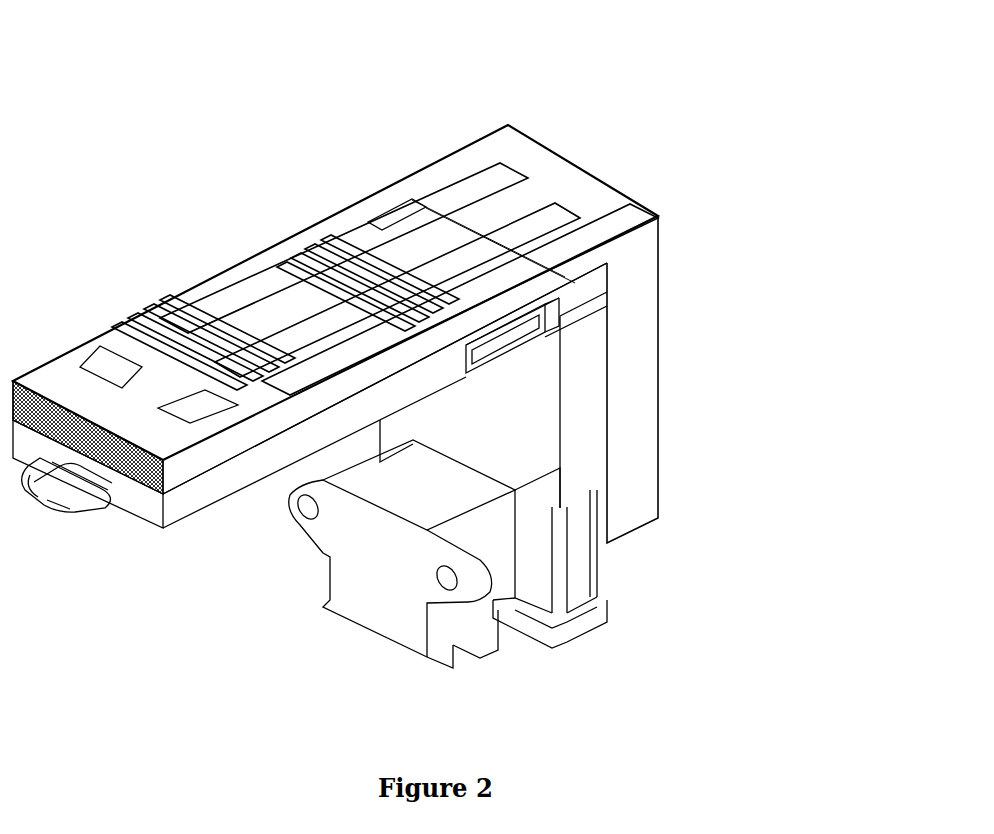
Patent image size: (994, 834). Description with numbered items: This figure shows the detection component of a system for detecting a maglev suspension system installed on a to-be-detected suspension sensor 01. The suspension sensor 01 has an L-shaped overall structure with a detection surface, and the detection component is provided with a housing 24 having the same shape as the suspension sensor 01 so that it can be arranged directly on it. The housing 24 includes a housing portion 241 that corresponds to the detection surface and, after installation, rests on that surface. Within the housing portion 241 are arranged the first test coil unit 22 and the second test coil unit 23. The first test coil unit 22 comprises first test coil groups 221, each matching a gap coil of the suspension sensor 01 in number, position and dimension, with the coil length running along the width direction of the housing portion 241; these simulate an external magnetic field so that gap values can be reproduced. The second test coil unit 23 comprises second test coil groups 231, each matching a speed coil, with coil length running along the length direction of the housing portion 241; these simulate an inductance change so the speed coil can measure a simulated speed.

The to-be-detected suspension sensor 01 is at (283, 456).
The first test coil unit 22 is at (312, 278).
The first test coil group 221 is at (113, 341).
The second test coil unit 23 is at (457, 208).
The second test coil group 231 is at (515, 178).
The housing 24 is at (658, 423).
The housing portion 241 is at (197, 462).